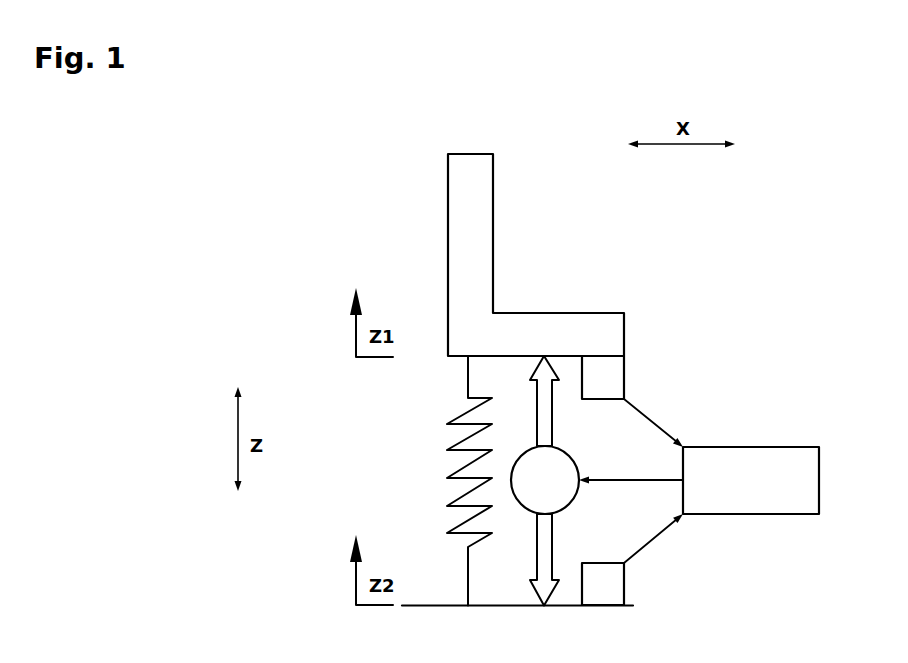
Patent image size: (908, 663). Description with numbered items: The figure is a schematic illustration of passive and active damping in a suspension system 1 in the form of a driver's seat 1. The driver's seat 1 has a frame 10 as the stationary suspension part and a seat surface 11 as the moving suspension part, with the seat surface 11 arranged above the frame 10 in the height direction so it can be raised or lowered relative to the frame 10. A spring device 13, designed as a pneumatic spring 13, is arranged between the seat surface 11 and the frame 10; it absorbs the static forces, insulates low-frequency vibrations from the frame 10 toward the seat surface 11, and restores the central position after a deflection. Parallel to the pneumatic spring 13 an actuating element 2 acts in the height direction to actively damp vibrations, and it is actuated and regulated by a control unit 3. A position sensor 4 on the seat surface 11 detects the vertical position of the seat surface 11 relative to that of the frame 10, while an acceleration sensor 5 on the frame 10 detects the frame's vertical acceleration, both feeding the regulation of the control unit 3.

The suspension system / driver's seat 1 is at (694, 288).
The actuating element 2 is at (536, 496).
The control unit 3 is at (820, 480).
The position sensor 4 is at (625, 375).
The acceleration sensor 5 is at (624, 582).
The frame 10 is at (645, 608).
The seat surface 11 is at (576, 312).
The spring device / pneumatic spring 13 is at (418, 470).